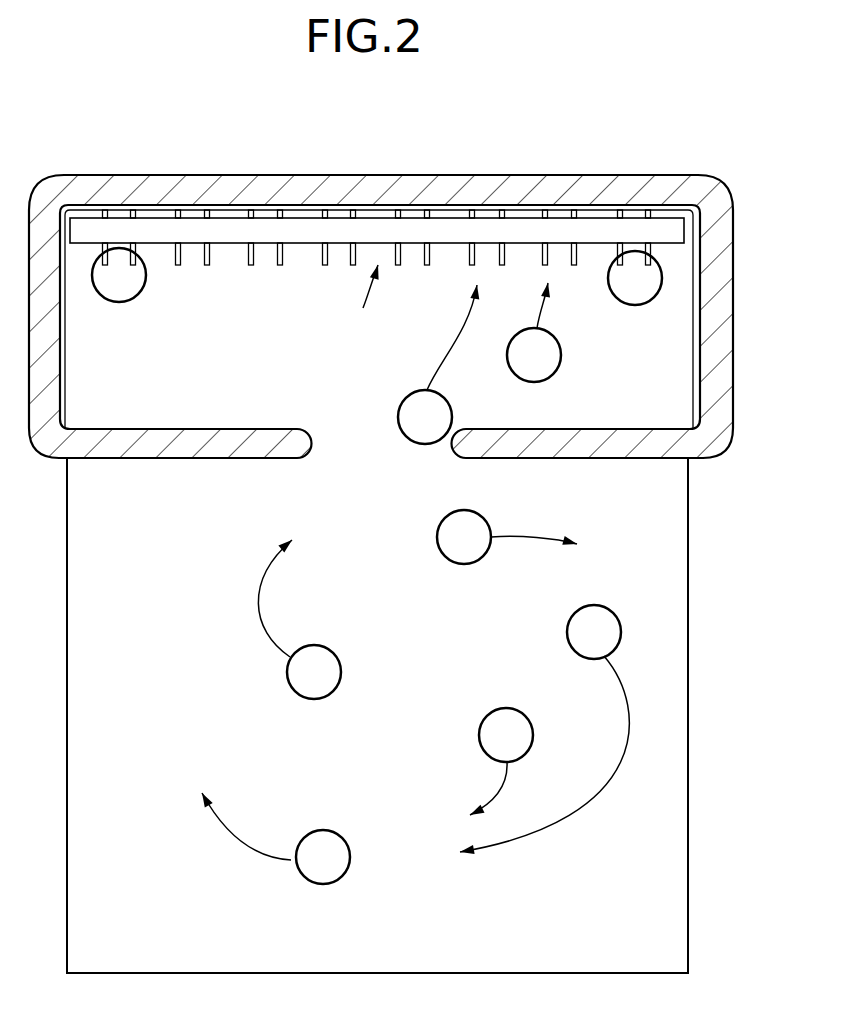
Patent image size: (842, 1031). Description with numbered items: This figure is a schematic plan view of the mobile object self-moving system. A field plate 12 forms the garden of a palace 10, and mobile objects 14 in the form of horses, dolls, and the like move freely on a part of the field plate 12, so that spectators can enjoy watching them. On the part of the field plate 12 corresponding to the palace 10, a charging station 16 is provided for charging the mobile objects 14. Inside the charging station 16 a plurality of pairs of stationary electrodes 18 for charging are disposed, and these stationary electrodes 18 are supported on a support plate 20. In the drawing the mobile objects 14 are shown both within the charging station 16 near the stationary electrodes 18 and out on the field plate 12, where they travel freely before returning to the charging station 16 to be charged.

The palace 10 is at (655, 176).
The field plate 12 is at (689, 530).
The mobile objects 14 is at (636, 305).
The charging station 16 is at (364, 304).
The stationary electrodes 18 is at (579, 266).
The support plate 20 is at (566, 232).